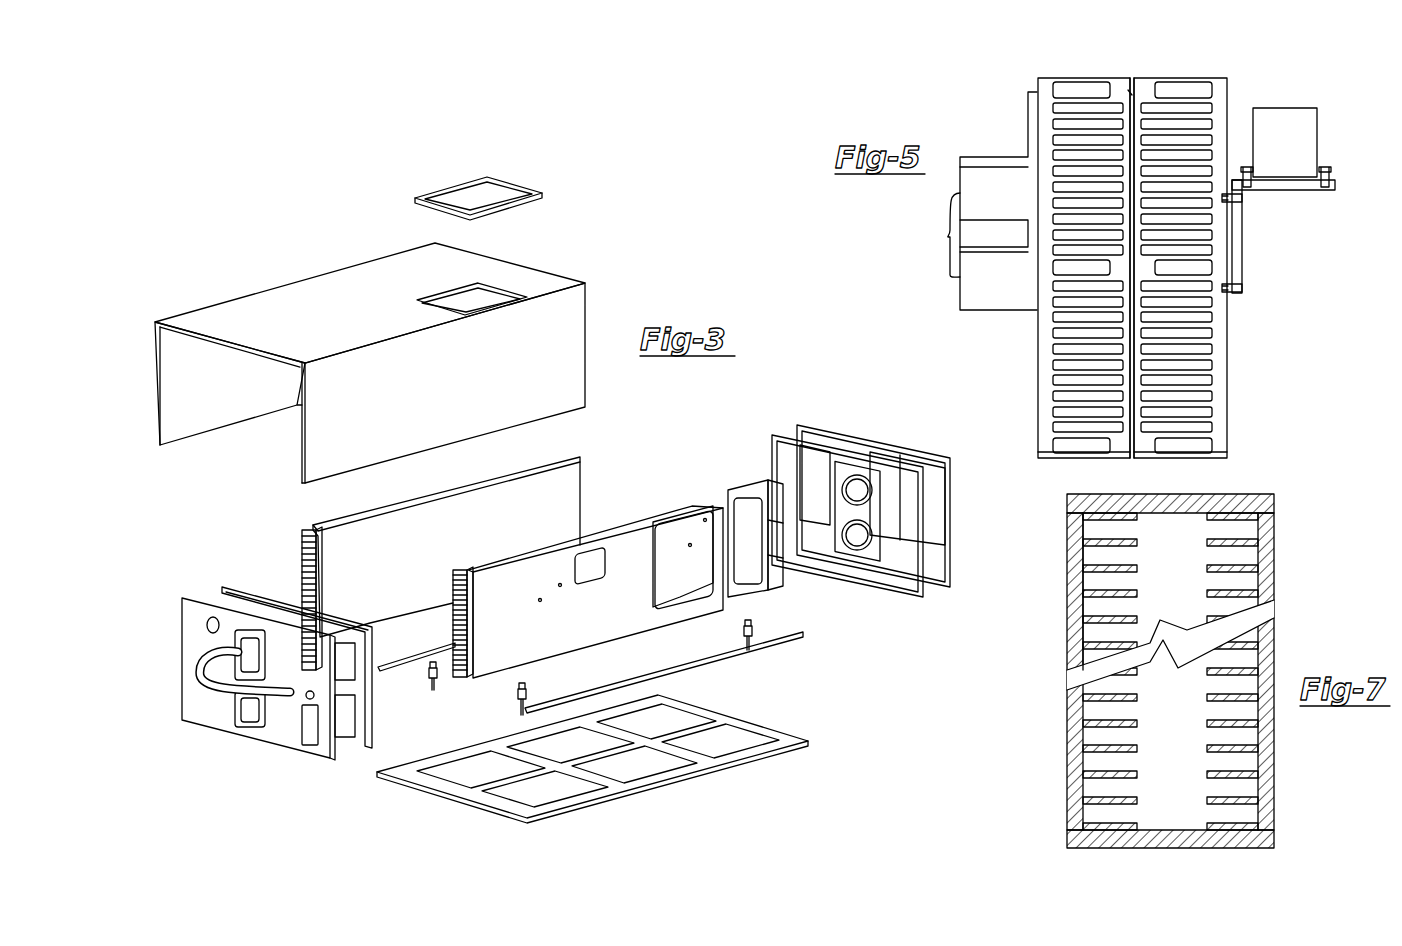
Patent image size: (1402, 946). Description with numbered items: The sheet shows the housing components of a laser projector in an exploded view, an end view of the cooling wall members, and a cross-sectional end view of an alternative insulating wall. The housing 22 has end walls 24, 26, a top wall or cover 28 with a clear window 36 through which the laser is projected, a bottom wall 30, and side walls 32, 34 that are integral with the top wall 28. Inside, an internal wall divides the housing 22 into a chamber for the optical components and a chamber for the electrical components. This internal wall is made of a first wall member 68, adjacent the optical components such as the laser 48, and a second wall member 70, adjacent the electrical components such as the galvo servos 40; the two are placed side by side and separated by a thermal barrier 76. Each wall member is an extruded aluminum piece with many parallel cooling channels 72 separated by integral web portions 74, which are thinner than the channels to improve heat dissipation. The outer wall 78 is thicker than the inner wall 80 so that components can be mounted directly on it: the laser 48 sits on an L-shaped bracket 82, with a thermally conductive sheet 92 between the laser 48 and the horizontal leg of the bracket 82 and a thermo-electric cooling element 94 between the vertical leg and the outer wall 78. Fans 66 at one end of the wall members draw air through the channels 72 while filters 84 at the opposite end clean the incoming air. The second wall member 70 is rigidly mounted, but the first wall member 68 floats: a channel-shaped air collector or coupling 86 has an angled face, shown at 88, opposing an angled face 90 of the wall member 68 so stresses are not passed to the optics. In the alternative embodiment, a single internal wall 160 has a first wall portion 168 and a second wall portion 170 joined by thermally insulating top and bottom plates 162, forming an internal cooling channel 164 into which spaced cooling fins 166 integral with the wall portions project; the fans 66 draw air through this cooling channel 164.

In FIG. 3, the housing 22 is at (370, 348).
In FIG. 3, the end wall 24 is at (861, 497).
In FIG. 3, the end wall 26 is at (262, 684).
In FIG. 3, the top wall or cover 28 is at (337, 285).
In FIG. 3, the bottom wall 30 is at (422, 775).
In FIG. 3, the side wall 32 is at (210, 410).
In FIG. 3, the side wall 34 is at (436, 396).
In FIG. 3, the clear window 36 is at (470, 190).
In FIG. 5, the galvo servos 40 is at (981, 201).
In FIG. 5, the laser 48 is at (1300, 110).
In FIG. 3, the fans 66 is at (858, 500).
In FIG. 3, the first wall member 68 is at (620, 625).
In FIG. 5, the first wall member 68 is at (1225, 95).
In FIG. 3, the second wall member 70 is at (335, 545).
In FIG. 5, the second wall member 70 is at (1040, 82).
In FIG. 3, the cooling channels 72 is at (305, 565).
In FIG. 5, the cooling channels 72 is at (1055, 330).
In FIG. 3, the web portions 74 is at (443, 690).
In FIG. 5, the web portions 74 is at (1068, 145).
In FIG. 5, the thermal barrier 76 is at (1133, 95).
In FIG. 5, the outer wall 78 is at (1045, 435).
In FIG. 5, the inner wall 80 is at (1132, 125).
In FIG. 5, the bracket 82 is at (1242, 245).
In FIG. 3, the filters 84 is at (238, 700).
In FIG. 3, the air collector or coupling 86 is at (744, 505).
In FIG. 3, the duct opening 88 is at (735, 485).
In FIG. 3, the angled face 90 is at (708, 507).
In FIG. 5, the thermally conductive sheet 92 is at (1300, 193).
In FIG. 5, the thermo-electric cooling element 94 is at (1240, 262).
In FIG. 7, the internal wall 160 is at (1173, 668).
In FIG. 7, the top and bottom plates 162 is at (1250, 496).
In FIG. 7, the cooling channel 164 is at (1172, 812).
In FIG. 7, the cooling fins 166 is at (1207, 543).
In FIG. 7, the first wall portion 168 is at (1270, 557).
In FIG. 7, the second wall portion 170 is at (1075, 600).